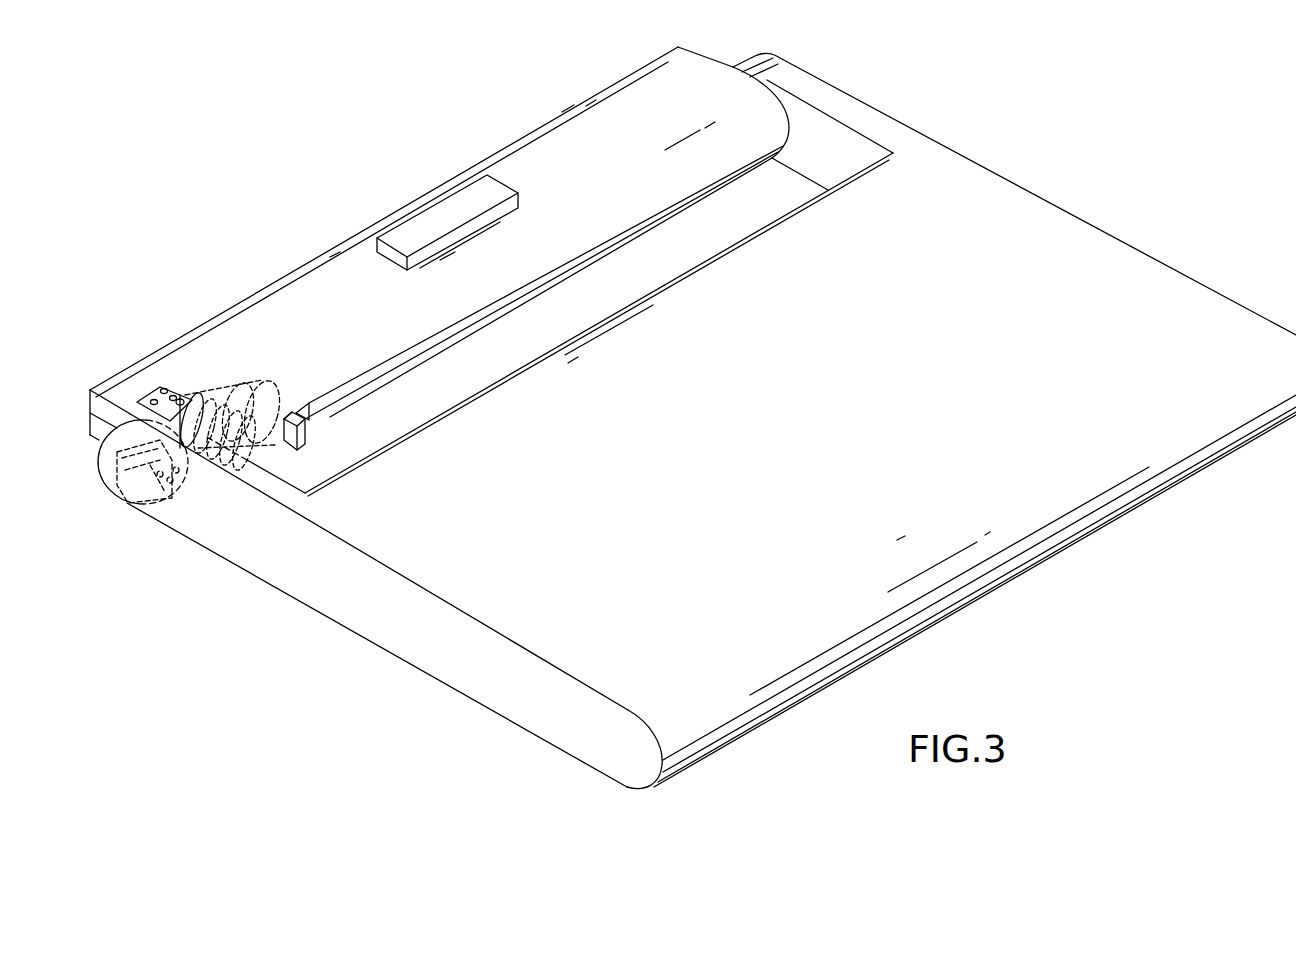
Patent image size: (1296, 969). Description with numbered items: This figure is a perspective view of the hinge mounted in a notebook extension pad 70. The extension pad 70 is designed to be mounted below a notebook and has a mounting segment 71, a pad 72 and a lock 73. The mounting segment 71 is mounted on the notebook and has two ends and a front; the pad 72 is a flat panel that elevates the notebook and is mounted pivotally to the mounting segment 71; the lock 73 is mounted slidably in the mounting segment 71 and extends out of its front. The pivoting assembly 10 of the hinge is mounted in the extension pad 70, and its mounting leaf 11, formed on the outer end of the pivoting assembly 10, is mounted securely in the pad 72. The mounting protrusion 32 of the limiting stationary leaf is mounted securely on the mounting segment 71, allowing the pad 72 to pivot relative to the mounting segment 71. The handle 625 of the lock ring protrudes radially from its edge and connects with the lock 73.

The extension pad 70 is at (850, 68).
The mounting segment 71 is at (670, 75).
The pad 72 is at (918, 153).
The lock 73 is at (307, 442).
The handle 625 is at (287, 414).
The mounting protrusion 32 is at (168, 388).
The mounting leaf 11 is at (127, 505).
The pivoting assembly 10 is at (175, 503).